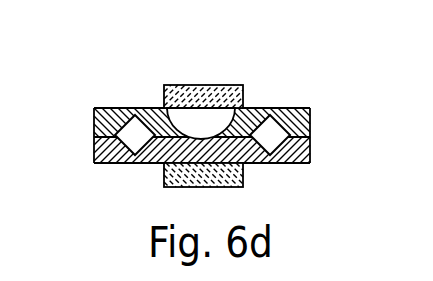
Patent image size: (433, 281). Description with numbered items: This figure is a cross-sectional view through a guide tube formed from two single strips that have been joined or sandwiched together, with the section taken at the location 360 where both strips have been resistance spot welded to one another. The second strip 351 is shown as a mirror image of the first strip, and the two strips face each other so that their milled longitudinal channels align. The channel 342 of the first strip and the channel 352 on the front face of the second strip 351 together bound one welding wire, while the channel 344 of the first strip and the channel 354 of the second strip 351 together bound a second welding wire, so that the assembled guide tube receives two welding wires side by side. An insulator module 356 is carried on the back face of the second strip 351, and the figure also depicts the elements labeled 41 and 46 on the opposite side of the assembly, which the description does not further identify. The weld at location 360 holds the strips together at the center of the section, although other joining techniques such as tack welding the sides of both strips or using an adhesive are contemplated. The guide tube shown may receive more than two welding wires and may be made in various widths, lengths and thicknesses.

The substrate 41 is at (152, 163).
The lower contact block 46 is at (245, 184).
The channel 342 is at (114, 163).
The channel 344 is at (308, 158).
The second strip 351 is at (259, 115).
The channel 352 is at (133, 113).
The channel 354 is at (296, 108).
The insulator module 356 is at (210, 86).
The resistance spot weld location 360 is at (221, 122).